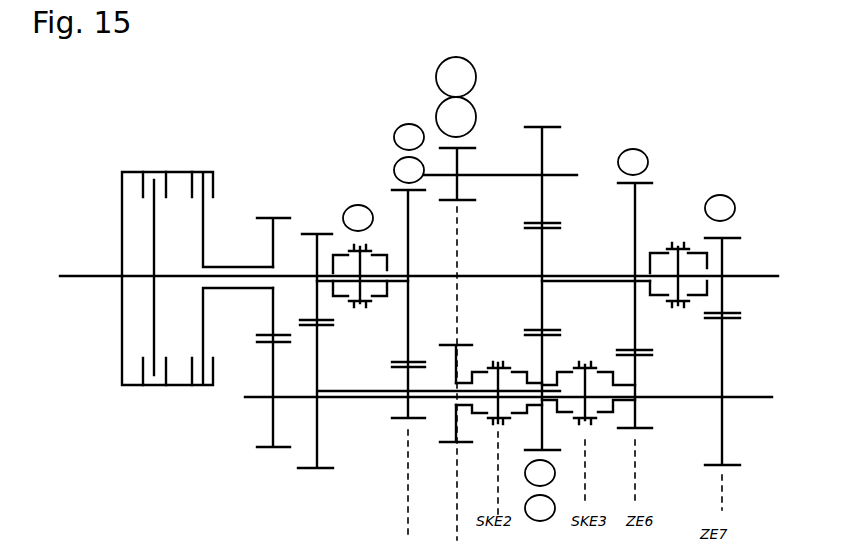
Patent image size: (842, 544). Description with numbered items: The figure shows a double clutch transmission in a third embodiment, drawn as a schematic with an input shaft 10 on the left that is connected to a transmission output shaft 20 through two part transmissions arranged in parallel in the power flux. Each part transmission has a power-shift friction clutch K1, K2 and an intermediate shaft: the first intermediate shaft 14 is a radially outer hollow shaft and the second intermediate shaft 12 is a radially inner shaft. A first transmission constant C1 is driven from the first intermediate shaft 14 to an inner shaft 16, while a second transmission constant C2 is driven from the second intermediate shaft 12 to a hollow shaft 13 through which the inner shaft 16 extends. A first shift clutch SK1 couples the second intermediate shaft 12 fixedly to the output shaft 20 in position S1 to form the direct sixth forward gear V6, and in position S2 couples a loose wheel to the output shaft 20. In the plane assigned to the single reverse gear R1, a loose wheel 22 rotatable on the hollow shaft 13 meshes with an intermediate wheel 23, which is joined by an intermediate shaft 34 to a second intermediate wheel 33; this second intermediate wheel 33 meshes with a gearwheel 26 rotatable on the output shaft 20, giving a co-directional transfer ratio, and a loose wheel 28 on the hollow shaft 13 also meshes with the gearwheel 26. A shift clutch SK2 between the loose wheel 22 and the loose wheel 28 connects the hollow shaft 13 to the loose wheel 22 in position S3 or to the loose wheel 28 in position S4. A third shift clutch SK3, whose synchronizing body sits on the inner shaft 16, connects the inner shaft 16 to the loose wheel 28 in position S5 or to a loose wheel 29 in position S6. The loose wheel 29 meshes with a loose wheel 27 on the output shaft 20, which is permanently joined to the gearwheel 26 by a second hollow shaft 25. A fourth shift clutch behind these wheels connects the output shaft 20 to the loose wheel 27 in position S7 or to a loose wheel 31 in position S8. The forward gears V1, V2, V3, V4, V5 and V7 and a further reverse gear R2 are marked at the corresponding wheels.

The input shaft 10 is at (78, 282).
The second intermediate shaft 12 is at (287, 272).
The hollow shaft 13 is at (347, 404).
The first intermediate shaft 14 is at (233, 264).
The inner shaft 16 is at (290, 390).
The transmission output shaft 20 is at (753, 268).
The loose wheel 22 is at (460, 357).
The intermediate wheel 23 is at (462, 160).
The second hollow shaft 25 is at (602, 267).
The gearwheel 26 is at (545, 248).
The loose wheel 27 is at (638, 222).
The loose wheel 28 is at (546, 349).
The loose wheel 29 is at (638, 372).
The loose wheel 31 is at (725, 248).
The second intermediate wheel 33 is at (545, 152).
The intermediate shaft 34 is at (500, 181).
The power-shift friction clutch K1 is at (202, 262).
The power-shift friction clutch K2 is at (167, 262).
The first transmission constant C1 is at (247, 360).
The second transmission constant C2 is at (334, 338).
The first shift clutch SK1 is at (367, 314).
The second shift clutch SK2 is at (499, 434).
The third shift clutch SK3 is at (590, 357).
The shift position S1 is at (334, 308).
The shift position S2 is at (385, 308).
The shift position S3 is at (473, 430).
The shift position S4 is at (525, 430).
The shift position S5 is at (559, 430).
The shift position S6 is at (606, 430).
The shift position S7 is at (676, 279).
The shift position S8 is at (701, 308).
The first forward gear V1 is at (408, 348).
The second forward gear V2 is at (409, 137).
The third forward gear V3 is at (633, 162).
The fourth forward gear V4 is at (540, 508).
The fifth forward gear V5 is at (540, 473).
The sixth forward gear V6 is at (358, 218).
The seventh forward gear V7 is at (720, 208).
The reverse gear R1 is at (456, 117).
The reverse gear R2 is at (456, 77).